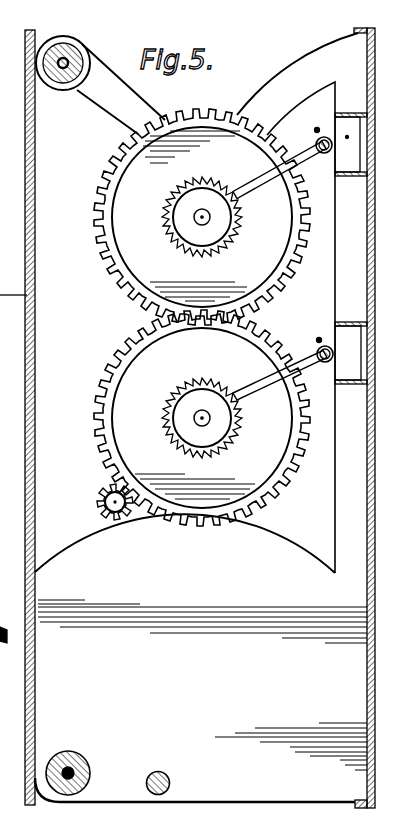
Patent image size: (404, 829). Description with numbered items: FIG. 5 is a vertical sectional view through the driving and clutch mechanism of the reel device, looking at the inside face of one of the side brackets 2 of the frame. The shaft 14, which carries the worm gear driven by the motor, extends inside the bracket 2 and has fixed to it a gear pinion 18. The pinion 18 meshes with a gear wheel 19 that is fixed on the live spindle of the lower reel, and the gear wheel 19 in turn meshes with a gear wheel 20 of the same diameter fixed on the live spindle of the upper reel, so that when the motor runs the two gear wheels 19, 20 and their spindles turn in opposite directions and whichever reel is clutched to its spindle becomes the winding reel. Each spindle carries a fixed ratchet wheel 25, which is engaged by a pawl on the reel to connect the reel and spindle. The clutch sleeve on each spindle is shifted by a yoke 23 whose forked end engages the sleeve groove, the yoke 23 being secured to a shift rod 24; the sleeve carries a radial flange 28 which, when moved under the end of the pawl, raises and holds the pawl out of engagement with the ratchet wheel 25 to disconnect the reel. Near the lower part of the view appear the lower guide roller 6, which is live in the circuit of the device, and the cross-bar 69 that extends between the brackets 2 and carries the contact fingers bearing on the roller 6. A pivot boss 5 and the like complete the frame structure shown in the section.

The bracket 2 is at (200, 418).
The pivot stud 5 is at (73, 49).
The lower guide roller 6 is at (80, 760).
The cross-bar 69 is at (167, 773).
The shaft 14 is at (113, 503).
The gear pinion 18 is at (100, 490).
The gear wheel 19 is at (130, 380).
The gear wheel 20 is at (135, 248).
The yoke 23 is at (258, 177).
The shift rod 24 is at (320, 155).
The ratchet wheel 25 is at (220, 222).
The radial flange 28 is at (217, 248).